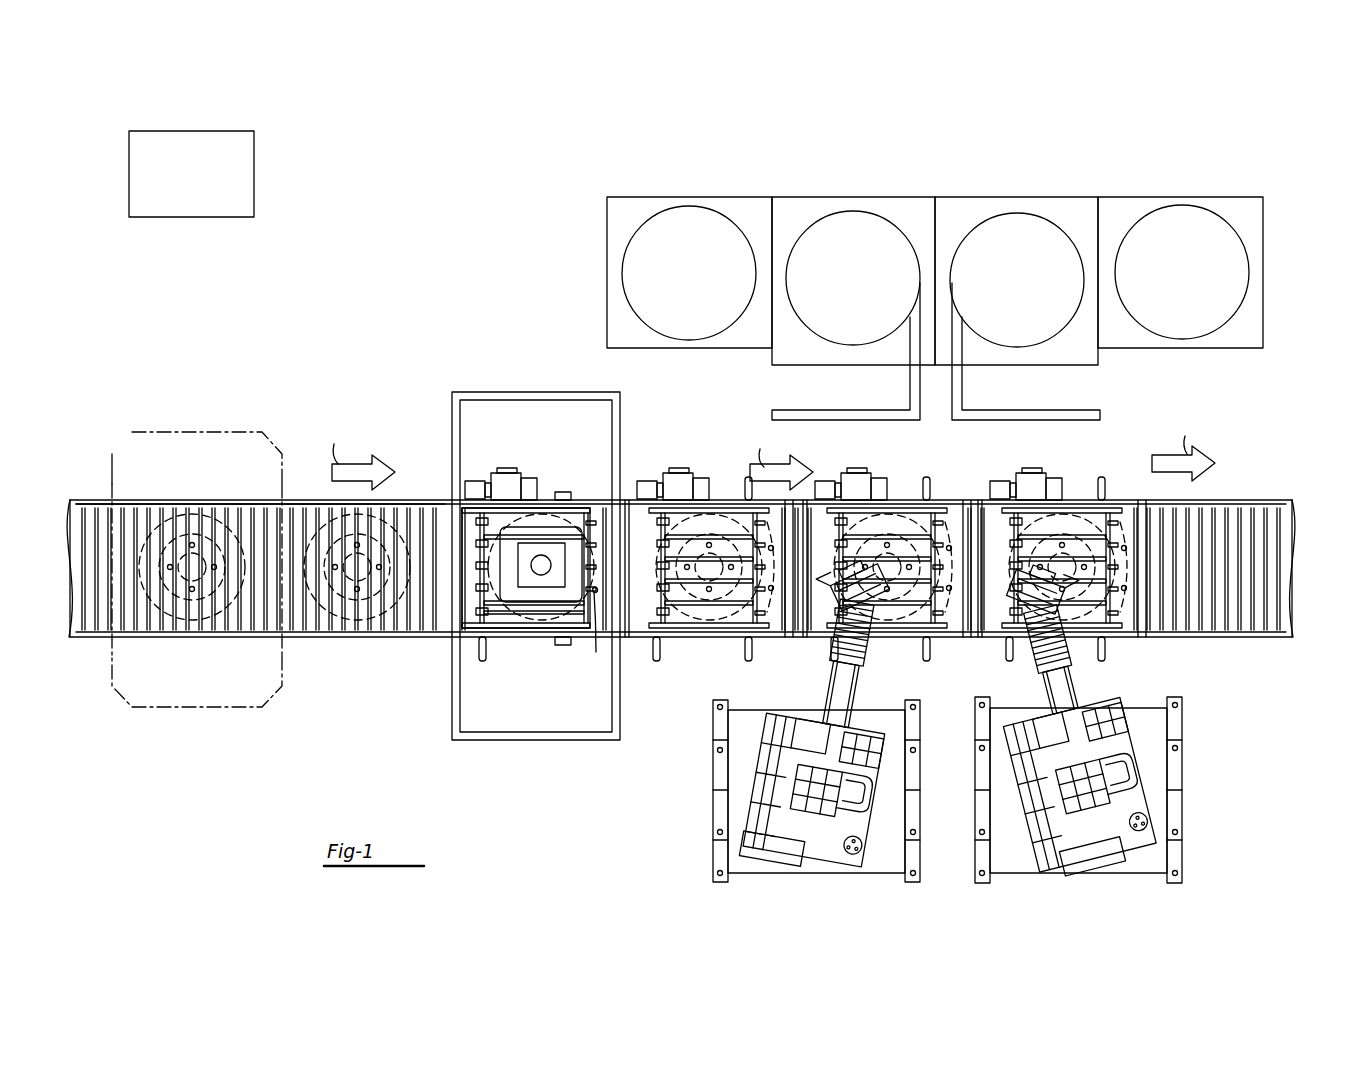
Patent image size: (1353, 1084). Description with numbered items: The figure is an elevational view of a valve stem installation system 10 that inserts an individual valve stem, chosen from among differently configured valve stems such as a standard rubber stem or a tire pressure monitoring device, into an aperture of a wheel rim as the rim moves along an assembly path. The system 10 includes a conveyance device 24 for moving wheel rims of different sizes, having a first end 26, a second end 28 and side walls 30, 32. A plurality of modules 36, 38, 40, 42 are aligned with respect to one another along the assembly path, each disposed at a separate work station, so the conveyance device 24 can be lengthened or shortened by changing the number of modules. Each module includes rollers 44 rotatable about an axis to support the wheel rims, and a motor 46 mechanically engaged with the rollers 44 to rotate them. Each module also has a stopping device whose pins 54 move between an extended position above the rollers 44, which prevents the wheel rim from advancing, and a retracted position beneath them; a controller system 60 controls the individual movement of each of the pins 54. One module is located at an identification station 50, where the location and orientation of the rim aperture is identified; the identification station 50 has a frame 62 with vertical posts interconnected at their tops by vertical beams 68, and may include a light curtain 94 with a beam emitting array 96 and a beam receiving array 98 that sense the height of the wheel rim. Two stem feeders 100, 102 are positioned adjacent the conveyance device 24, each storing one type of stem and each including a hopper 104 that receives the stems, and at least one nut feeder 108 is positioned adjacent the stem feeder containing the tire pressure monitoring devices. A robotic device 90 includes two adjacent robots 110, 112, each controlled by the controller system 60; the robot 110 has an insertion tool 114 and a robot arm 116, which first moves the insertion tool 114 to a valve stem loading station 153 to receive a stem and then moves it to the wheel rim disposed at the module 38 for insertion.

The valve stem installation system 10 is at (491, 234).
The conveyance device 24 is at (288, 615).
The first end 26 is at (69, 500).
The second end 28 is at (1292, 500).
The side wall 30 is at (393, 637).
The side wall 32 is at (421, 500).
The module 36 is at (522, 628).
The module 38 is at (709, 586).
The module 40 is at (887, 556).
The module 42 is at (1062, 551).
The rollers 44 is at (482, 636).
The motor 46 is at (530, 472).
The identification station 50 is at (536, 587).
The pins 54 is at (596, 646).
The controller system 60 is at (262, 168).
The frame 62 is at (585, 740).
The vertical beams 68 is at (500, 395).
The robotic device 90 is at (968, 876).
The light curtain 94 is at (558, 420).
The beam emitting array 96 is at (562, 492).
The beam receiving array 98 is at (563, 646).
The stem feeder 100 is at (866, 242).
The stem feeder 102 is at (1027, 246).
The hopper 104 is at (819, 226).
The nut feeder 108 is at (694, 220).
The robot 110 is at (766, 873).
The robot 112 is at (1063, 874).
The insertion tool 114 is at (871, 596).
The robot arm 116 is at (844, 698).
The valve stem loading station 153 is at (1008, 105).